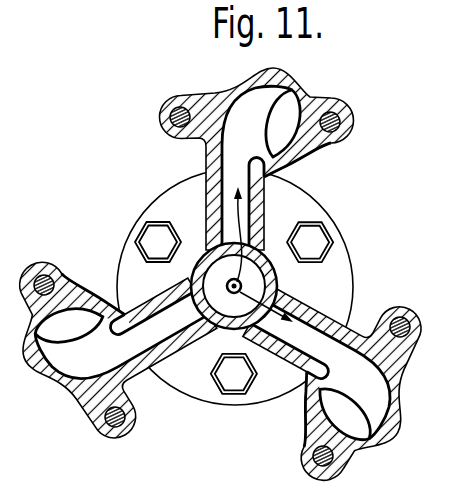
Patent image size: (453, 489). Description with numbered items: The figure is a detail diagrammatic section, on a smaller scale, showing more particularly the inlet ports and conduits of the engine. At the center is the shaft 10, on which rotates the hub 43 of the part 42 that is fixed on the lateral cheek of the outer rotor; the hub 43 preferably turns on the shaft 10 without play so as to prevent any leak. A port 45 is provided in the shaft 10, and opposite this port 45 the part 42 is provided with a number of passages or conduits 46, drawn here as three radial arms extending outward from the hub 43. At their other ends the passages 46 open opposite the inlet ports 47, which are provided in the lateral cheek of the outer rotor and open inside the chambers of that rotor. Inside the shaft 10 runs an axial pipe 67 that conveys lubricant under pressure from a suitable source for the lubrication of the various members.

The shaft 10 is at (226, 244).
The part fixed on the lateral cheek 42 is at (163, 212).
The hub 43 is at (215, 160).
The port 45 is at (267, 298).
The passages or conduits 46 is at (235, 176).
The inlet ports 47 is at (288, 113).
The axial pipe 67 is at (242, 286).